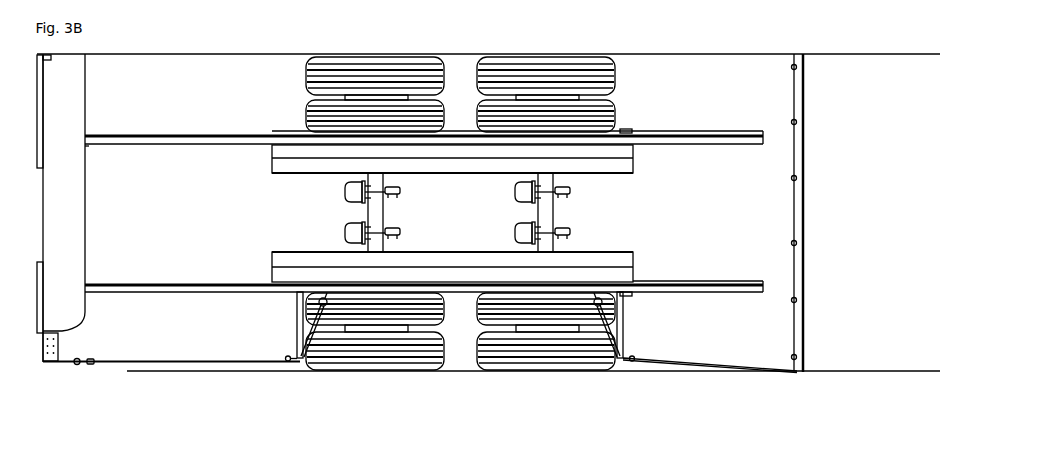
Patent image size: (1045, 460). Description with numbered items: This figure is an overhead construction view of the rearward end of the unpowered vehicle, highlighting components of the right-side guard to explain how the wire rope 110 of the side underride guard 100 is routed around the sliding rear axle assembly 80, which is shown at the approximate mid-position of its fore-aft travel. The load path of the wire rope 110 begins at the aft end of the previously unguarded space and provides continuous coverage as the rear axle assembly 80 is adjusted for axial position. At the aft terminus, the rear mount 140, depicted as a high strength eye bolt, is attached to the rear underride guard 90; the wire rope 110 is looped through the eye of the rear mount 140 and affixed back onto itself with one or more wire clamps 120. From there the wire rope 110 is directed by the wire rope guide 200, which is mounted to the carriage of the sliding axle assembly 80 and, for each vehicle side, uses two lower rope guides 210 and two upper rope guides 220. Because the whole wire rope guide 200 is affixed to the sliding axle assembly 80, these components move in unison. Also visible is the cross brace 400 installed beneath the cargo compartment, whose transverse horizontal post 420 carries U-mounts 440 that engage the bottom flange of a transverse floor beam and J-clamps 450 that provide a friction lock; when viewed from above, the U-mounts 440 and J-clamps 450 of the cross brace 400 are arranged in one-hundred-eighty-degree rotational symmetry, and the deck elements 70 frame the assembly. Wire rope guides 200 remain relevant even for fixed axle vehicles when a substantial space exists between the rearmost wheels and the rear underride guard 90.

The deck 70 is at (752, 146).
The sliding axle assembly 80 is at (545, 366).
The rear underride guard 90 is at (47, 363).
The side underride guard 100 is at (692, 376).
The wire rope 110 is at (680, 363).
The wire clamp 120 is at (90, 364).
The rear mount 140 is at (70, 364).
The wire rope guide 200 is at (306, 376).
The lower rope guide 210 is at (298, 361).
The upper rope guide 220 is at (320, 299).
The cross brace 400 is at (860, 213).
The horizontal post 420 is at (800, 146).
The U-mount 440 is at (803, 172).
The J-clamp 450 is at (805, 357).